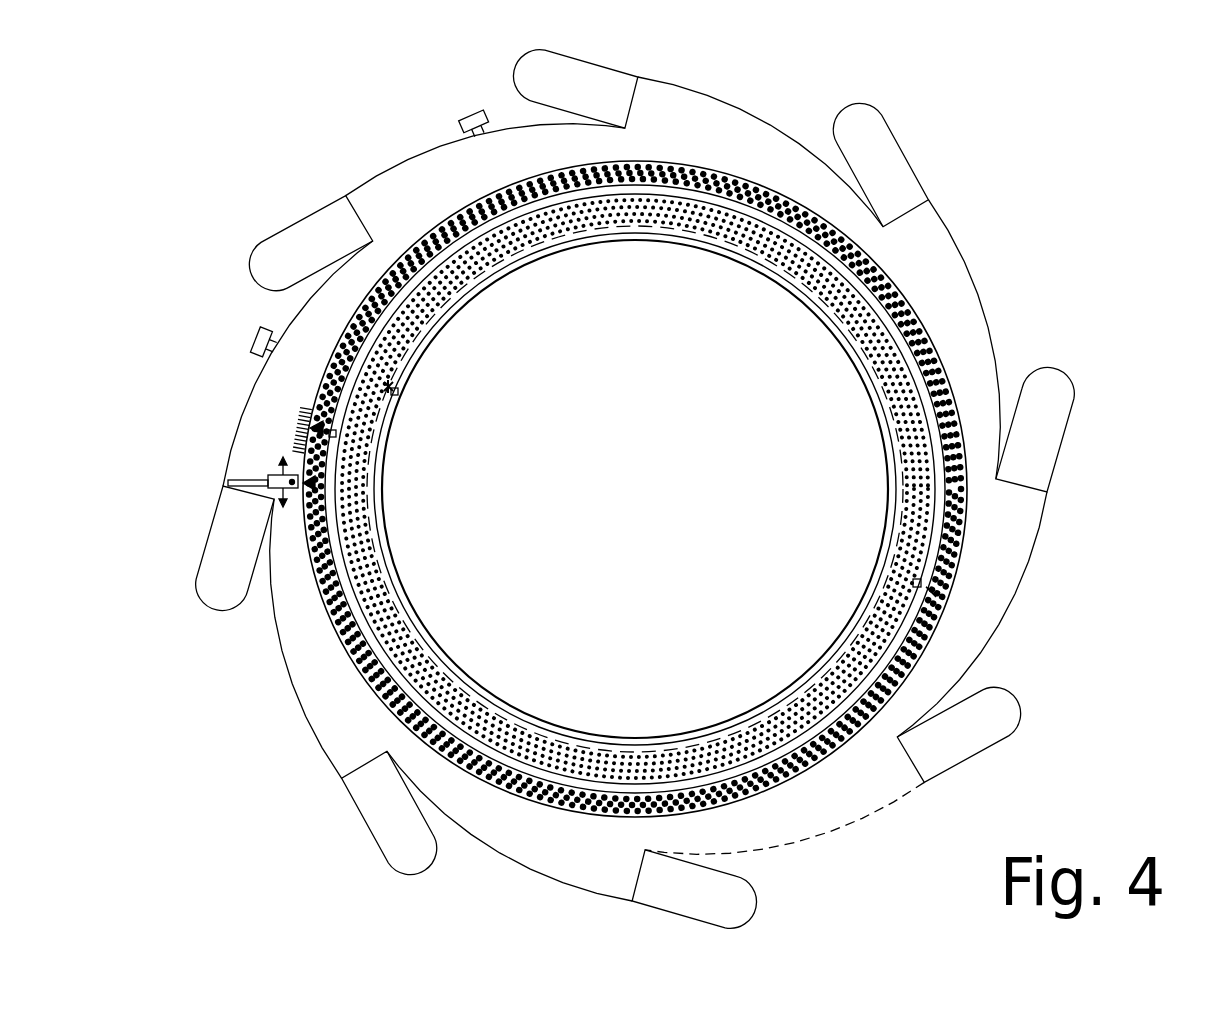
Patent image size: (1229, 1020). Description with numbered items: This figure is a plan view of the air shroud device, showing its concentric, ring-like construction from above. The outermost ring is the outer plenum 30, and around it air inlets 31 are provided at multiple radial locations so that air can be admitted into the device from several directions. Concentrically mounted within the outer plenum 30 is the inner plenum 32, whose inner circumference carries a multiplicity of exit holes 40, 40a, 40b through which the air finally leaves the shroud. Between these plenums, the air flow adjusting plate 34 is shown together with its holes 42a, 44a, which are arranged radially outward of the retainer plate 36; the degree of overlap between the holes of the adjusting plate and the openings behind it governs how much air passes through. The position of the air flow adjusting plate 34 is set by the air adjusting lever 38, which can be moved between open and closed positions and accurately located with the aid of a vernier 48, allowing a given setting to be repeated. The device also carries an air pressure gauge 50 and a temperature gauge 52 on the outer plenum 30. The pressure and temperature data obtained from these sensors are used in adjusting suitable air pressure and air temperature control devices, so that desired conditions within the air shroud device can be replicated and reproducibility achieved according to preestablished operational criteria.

The outer plenum 30 is at (983, 290).
The air inlets 31 is at (1068, 428).
The inner plenum 32 is at (857, 360).
The air flow adjusting plate 34 is at (365, 642).
The retainer plate 36 is at (517, 218).
The air adjusting lever 38 is at (262, 480).
The exit holes 40 is at (397, 393).
The exit holes 40a is at (388, 386).
The exit holes 40b is at (388, 386).
The holes 42a is at (937, 595).
The holes 44a is at (931, 592).
The vernier 48 is at (317, 428).
The air pressure gauge 50 is at (247, 332).
The temperature gauge 52 is at (473, 115).